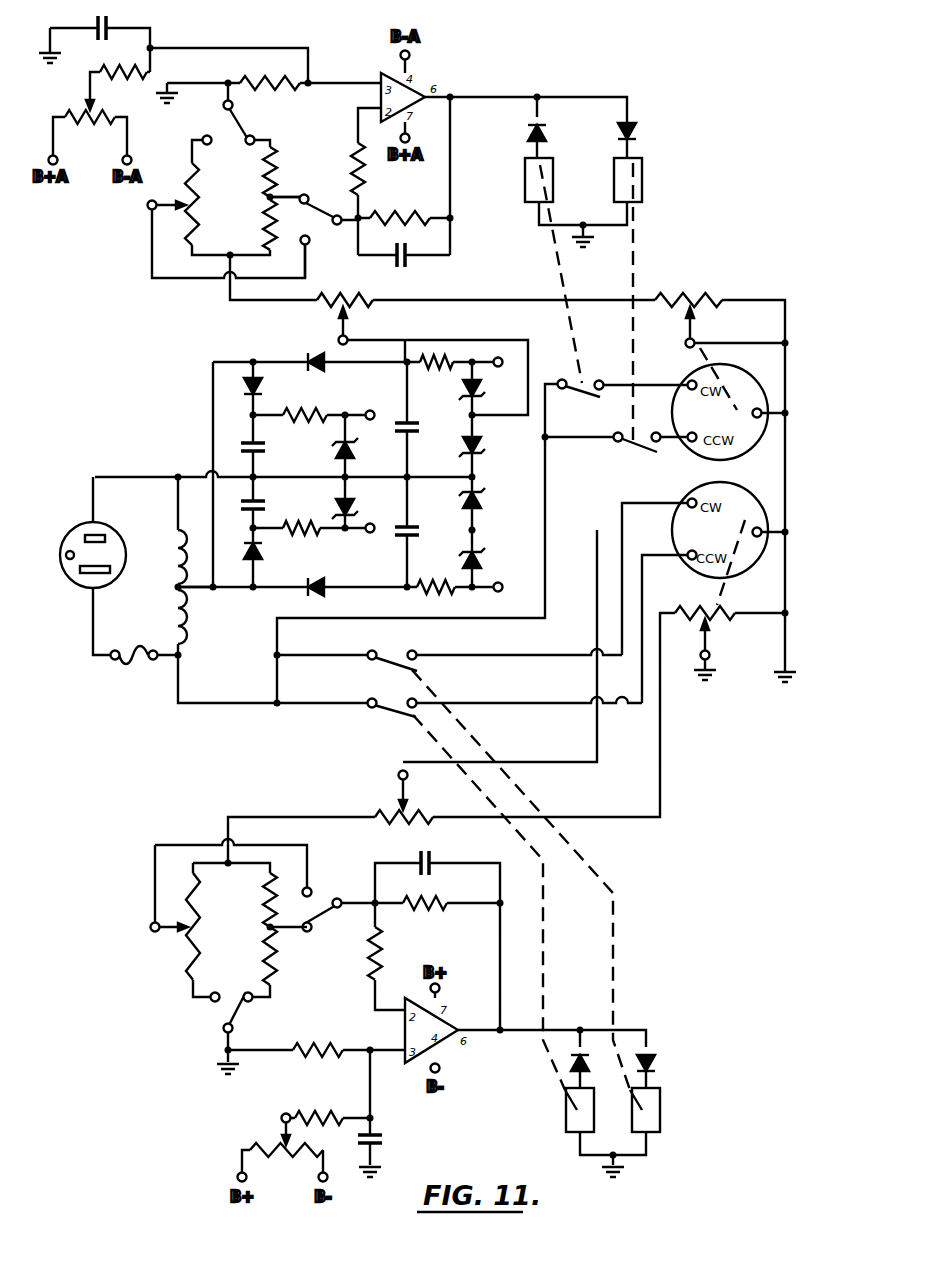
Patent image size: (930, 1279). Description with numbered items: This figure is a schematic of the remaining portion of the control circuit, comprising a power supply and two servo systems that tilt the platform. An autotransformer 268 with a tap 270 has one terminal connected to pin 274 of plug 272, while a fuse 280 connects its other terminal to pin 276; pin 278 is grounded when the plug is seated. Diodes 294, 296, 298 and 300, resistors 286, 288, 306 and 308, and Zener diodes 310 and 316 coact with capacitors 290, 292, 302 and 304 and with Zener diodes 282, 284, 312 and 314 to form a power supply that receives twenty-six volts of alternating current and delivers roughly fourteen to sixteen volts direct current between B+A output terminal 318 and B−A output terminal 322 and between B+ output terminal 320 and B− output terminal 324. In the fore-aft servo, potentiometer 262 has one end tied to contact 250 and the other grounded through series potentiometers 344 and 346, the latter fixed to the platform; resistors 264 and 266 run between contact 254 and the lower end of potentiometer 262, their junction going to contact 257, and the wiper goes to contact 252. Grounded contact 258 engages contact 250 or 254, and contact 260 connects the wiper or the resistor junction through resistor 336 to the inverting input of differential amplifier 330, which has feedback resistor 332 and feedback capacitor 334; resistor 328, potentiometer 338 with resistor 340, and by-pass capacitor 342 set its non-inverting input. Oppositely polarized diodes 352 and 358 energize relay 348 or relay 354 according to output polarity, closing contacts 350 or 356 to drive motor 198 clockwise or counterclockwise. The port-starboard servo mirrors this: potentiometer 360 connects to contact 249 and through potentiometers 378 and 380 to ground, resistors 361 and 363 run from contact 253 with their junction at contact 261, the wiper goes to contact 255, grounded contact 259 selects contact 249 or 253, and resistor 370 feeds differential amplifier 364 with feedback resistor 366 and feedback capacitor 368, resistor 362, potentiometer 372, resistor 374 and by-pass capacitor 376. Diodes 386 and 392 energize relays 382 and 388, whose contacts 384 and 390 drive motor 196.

The motor 196 is at (746, 507).
The motor 198 is at (748, 387).
The contact 249 is at (208, 997).
The contact 250 is at (206, 136).
The contact 252 is at (303, 248).
The contact 253 is at (252, 1002).
The contact 254 is at (257, 177).
The contact 255 is at (312, 888).
The contact 257 is at (306, 196).
The relay contact 258 is at (243, 125).
The relay contact 259 is at (228, 1015).
The relay contact 260 is at (318, 230).
The relay contact 261 is at (322, 908).
The potentiometer 262 is at (188, 165).
The resistor 264 is at (275, 160).
The resistor 266 is at (266, 230).
The autotransformer 268 is at (176, 562).
The tap 270 is at (176, 617).
The plug 272 is at (175, 590).
The pin 274 is at (100, 536).
The pin 276 is at (86, 578).
The pin 278 is at (70, 550).
The fuse 280 is at (136, 662).
The Zener diode 282 is at (333, 450).
The Zener diode 284 is at (372, 502).
The resistor 286 is at (333, 405).
The resistor 288 is at (310, 534).
The capacitor 290 is at (232, 447).
The capacitor 292 is at (263, 505).
The diode 294 is at (243, 385).
The diode 296 is at (312, 352).
The diode 298 is at (263, 554).
The diode 300 is at (318, 596).
The capacitor 302 is at (421, 427).
The capacitor 304 is at (421, 535).
The resistor 306 is at (440, 356).
The resistor 308 is at (418, 594).
The Zener diode 310 is at (481, 389).
The Zener diode 312 is at (483, 452).
The Zener diode 314 is at (483, 500).
The Zener diode 316 is at (483, 560).
The B+A output terminal 318 is at (372, 408).
The B+ output terminal 320 is at (370, 534).
The B−A output terminal 322 is at (498, 356).
The B− output terminal 324 is at (503, 590).
The resistor 328 is at (268, 80).
The differential amplifier 330 is at (418, 88).
The feedback resistor 332 is at (396, 212).
The feedback capacitor 334 is at (402, 264).
The resistor 336 is at (358, 150).
The potentiometer 338 is at (97, 132).
The resistor 340 is at (98, 62).
The by-pass capacitor 342 is at (118, 24).
The potentiometer 344 is at (316, 308).
The potentiometer 346 is at (692, 292).
The relay 348 is at (524, 180).
The relay contacts 350 is at (578, 392).
The diode 352 is at (524, 128).
The relay 354 is at (642, 180).
The relay contacts 356 is at (637, 448).
The diode 358 is at (640, 133).
The potentiometer 360 is at (185, 945).
The resistor 361 is at (266, 908).
The resistor 363 is at (262, 968).
The resistor 362 is at (330, 1045).
The differential amplifier 364 is at (446, 1060).
The feedback resistor 366 is at (442, 920).
The feedback capacitor 368 is at (431, 852).
The resistor 370 is at (385, 960).
The potentiometer 372 is at (256, 1148).
The resistor 374 is at (316, 1106).
The by-pass capacitor 376 is at (385, 1140).
The potentiometer 378 is at (385, 810).
The potentiometer 380 is at (722, 622).
The relay 382 is at (567, 1118).
The relay contacts 384 is at (382, 708).
The diode 386 is at (563, 1060).
The relay 388 is at (660, 1118).
The relay contacts 390 is at (396, 660).
The diode 392 is at (658, 1062).